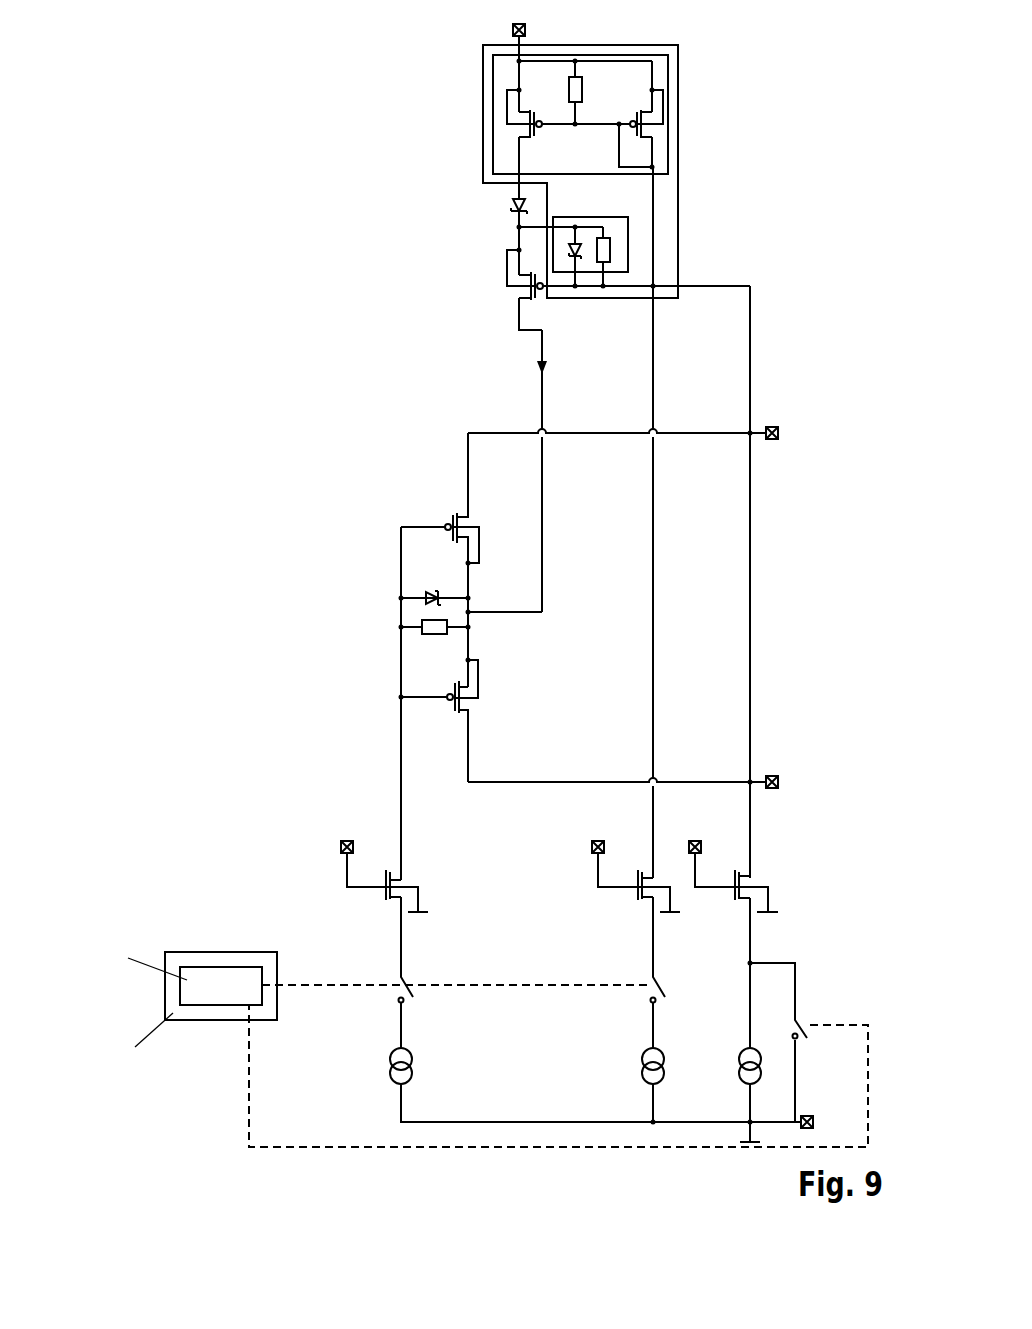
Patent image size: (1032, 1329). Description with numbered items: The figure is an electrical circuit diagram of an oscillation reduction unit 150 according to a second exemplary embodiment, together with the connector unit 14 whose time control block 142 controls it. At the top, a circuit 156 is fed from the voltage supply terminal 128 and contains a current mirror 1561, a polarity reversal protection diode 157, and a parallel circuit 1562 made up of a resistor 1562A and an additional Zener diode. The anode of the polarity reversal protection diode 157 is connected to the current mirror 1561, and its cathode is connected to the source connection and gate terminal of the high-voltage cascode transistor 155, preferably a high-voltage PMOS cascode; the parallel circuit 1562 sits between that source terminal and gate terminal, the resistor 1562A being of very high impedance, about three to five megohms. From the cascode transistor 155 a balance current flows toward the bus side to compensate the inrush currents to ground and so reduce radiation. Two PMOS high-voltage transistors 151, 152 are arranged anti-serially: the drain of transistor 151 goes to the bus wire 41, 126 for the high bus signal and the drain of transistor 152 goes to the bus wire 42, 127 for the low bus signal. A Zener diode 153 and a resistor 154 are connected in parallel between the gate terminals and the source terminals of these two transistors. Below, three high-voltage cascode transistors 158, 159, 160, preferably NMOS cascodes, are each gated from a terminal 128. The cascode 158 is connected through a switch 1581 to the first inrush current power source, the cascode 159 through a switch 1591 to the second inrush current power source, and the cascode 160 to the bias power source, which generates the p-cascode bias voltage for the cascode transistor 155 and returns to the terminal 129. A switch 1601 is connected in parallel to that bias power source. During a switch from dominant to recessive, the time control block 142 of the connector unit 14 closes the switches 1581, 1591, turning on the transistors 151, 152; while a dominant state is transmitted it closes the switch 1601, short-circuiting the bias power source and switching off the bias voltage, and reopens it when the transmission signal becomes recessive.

The oscillation reduction unit 150 is at (368, 84).
The terminal 128 is at (527, 30).
The circuit 156 is at (678, 202).
The current mirror 1561 is at (668, 124).
The polarity reversal protection diode 157 is at (514, 203).
The parallel circuit 1562 is at (583, 217).
The resistor 1562A is at (610, 250).
The high-voltage cascode transistor 155 is at (529, 298).
The bus wire 41 is at (672, 435).
The terminal 126 is at (778, 435).
The bus wire 42 is at (672, 782).
The terminal 127 is at (778, 782).
The PMOS high-voltage transistor 151 is at (455, 515).
The PMOS high-voltage transistor 152 is at (450, 713).
The Zener diode 153 is at (426, 594).
The resistor 154 is at (426, 620).
The high-voltage cascode transistor 158 is at (386, 902).
The high-voltage cascode transistor 159 is at (638, 902).
The high-voltage cascode transistor 160 is at (735, 902).
The switch 1581 is at (403, 977).
The switch 1591 is at (657, 983).
The switch 1601 is at (800, 1020).
The terminal 129 is at (810, 1117).
The connector unit 14 is at (223, 1022).
The time control block 142 is at (222, 967).